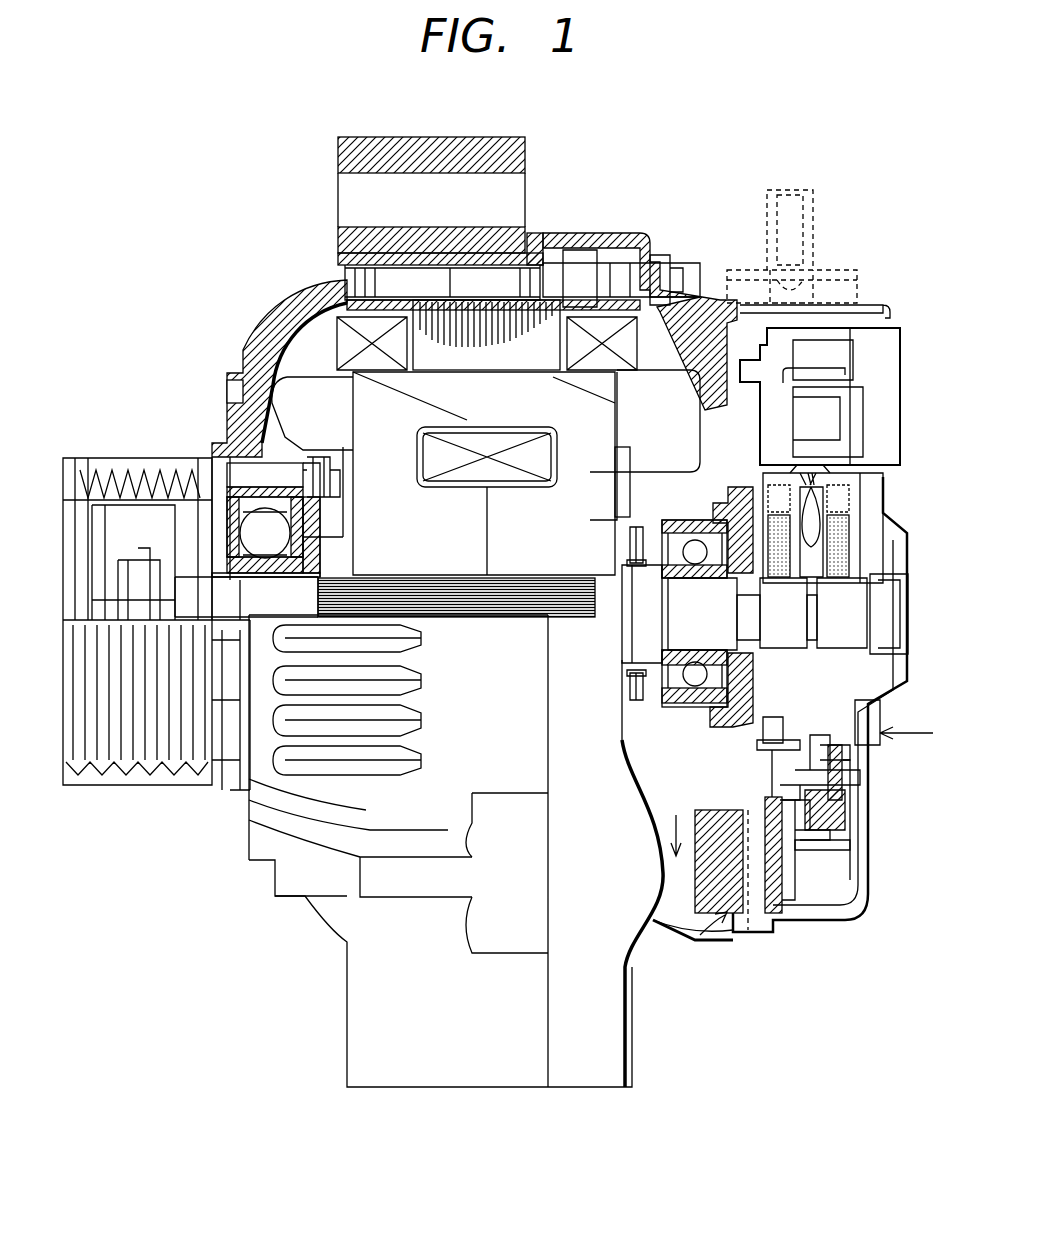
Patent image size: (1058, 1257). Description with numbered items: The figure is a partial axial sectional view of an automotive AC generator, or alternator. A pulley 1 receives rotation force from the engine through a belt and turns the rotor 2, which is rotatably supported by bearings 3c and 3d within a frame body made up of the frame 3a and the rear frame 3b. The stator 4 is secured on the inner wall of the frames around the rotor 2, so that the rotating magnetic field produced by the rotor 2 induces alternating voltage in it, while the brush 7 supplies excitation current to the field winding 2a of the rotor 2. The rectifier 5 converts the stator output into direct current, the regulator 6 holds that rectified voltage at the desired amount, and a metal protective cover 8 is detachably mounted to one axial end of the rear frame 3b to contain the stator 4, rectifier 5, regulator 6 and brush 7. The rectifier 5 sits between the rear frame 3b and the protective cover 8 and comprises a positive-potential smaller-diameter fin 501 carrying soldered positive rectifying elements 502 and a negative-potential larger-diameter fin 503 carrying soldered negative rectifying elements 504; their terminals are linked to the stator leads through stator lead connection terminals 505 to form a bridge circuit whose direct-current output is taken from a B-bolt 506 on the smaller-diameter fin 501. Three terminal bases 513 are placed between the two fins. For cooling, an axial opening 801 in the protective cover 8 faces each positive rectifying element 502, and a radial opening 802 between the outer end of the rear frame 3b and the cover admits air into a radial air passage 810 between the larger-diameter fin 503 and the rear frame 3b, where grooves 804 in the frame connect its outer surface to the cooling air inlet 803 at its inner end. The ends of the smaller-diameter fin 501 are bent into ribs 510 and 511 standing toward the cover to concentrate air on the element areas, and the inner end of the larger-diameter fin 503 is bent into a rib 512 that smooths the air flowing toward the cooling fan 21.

The pulley 1 is at (118, 460).
The rotor 2 is at (365, 415).
The field winding 2a is at (490, 435).
The frame 3a is at (540, 232).
The rear frame 3b is at (623, 237).
The bearing 3c is at (262, 520).
The bearing 3d is at (678, 520).
The stator 4 is at (482, 347).
The rectifier 5 is at (827, 868).
The regulator 6 is at (888, 350).
The brush 7 is at (850, 483).
The protective cover 8 is at (852, 920).
The cooling fan 21 is at (637, 818).
The smaller-diameter fin 501 is at (840, 815).
The positive rectifying element 502 is at (812, 740).
The larger-diameter fin 503 is at (765, 917).
The negative rectifying element 504 is at (787, 920).
The stator lead connection terminal 505 is at (850, 842).
The B-bolt 506 is at (815, 232).
The rib 510 is at (866, 708).
The rib 511 is at (853, 890).
The rib 512 is at (763, 783).
The terminal base 513 is at (843, 790).
The axial opening 801 is at (865, 740).
The radial opening 802 is at (712, 933).
The cooling air inlet 803 is at (680, 777).
The groove 804 is at (680, 865).
The radial air passage 810 is at (740, 887).